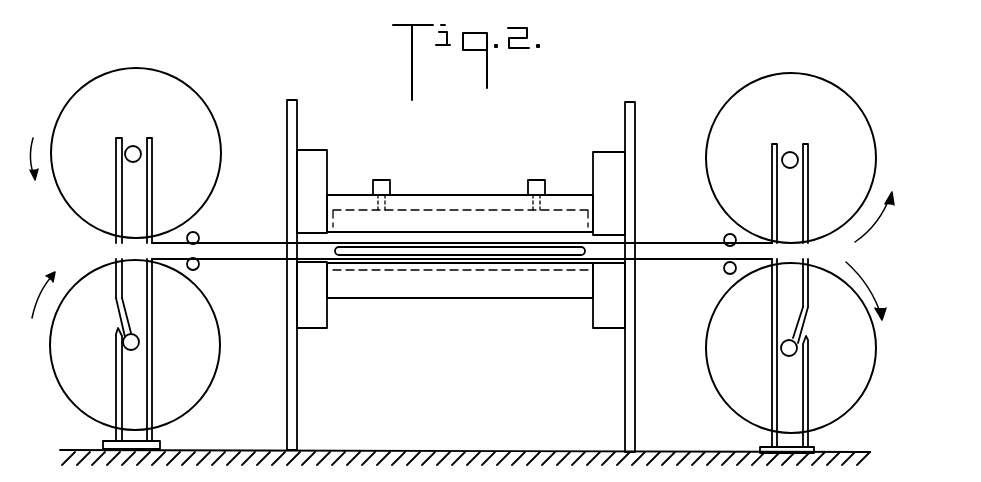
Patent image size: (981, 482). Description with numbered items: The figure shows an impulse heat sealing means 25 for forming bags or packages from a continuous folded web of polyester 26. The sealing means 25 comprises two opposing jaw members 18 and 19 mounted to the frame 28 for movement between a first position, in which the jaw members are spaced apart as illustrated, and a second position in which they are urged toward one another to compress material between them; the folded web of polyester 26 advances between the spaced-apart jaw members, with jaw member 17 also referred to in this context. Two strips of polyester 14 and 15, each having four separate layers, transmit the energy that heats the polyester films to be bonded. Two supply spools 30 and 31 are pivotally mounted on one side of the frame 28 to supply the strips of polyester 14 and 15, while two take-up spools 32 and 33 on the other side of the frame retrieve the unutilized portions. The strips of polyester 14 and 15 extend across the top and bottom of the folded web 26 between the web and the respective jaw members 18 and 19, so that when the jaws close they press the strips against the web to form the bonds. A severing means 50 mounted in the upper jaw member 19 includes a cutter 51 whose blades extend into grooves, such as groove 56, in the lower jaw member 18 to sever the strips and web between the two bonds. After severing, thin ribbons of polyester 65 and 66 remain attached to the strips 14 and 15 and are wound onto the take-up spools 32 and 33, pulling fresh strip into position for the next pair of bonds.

The strip of polyester 14 is at (240, 259).
The strip of polyester 15 is at (245, 243).
The jaw member 17 is at (535, 304).
The lower jaw member 18 is at (410, 300).
The upper jaw member 19 is at (412, 197).
The impulse heat sealing means 25 is at (580, 112).
The web of polyester 26 is at (483, 250).
The frame 28 is at (298, 108).
The supply spool 30 is at (82, 398).
The supply spool 31 is at (143, 72).
The take-up spool 32 is at (855, 392).
The take-up spool 33 is at (851, 128).
The severing means 50 is at (381, 178).
The cutter 51 is at (455, 208).
The groove 56 is at (493, 266).
The ribbon of polyester 65 is at (665, 260).
The ribbon of polyester 66 is at (673, 243).